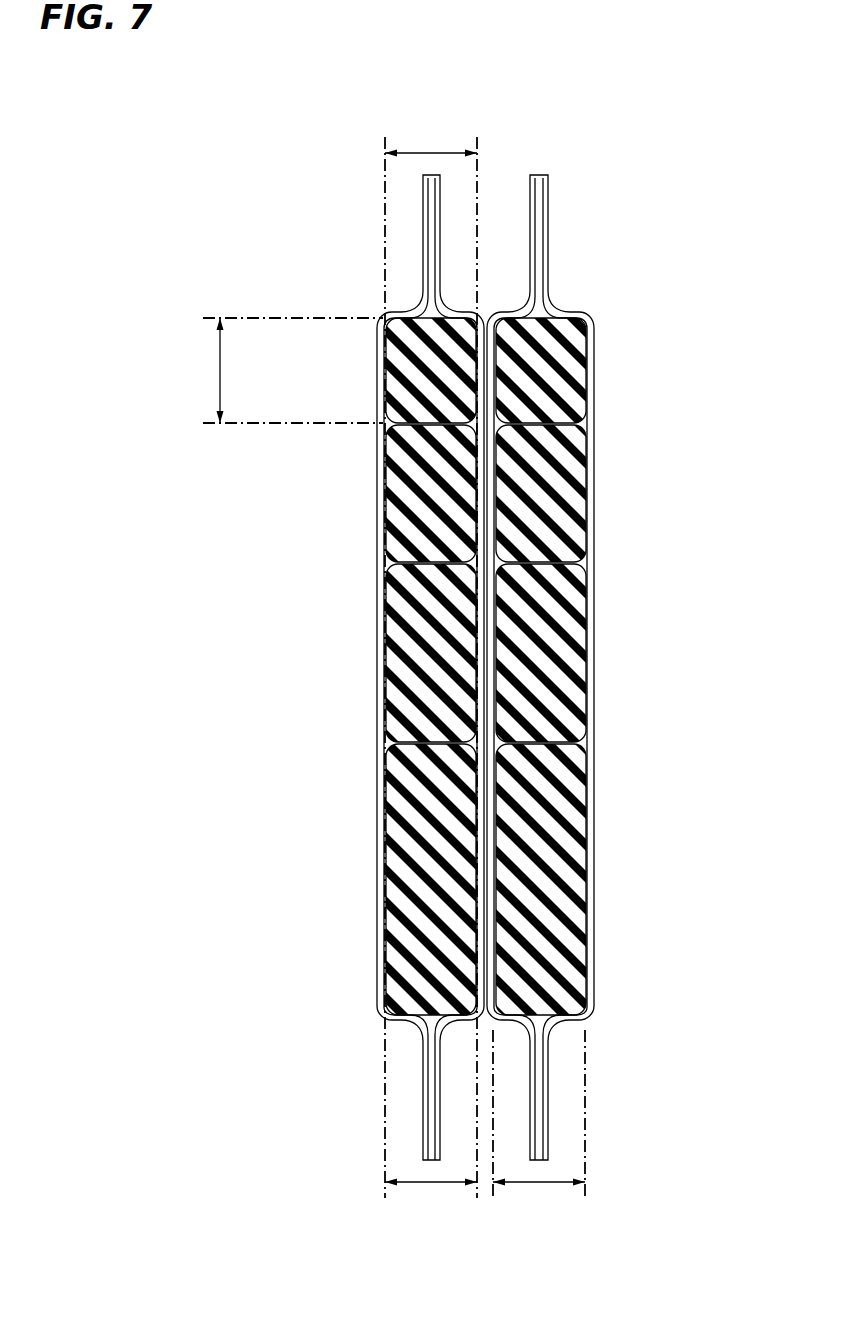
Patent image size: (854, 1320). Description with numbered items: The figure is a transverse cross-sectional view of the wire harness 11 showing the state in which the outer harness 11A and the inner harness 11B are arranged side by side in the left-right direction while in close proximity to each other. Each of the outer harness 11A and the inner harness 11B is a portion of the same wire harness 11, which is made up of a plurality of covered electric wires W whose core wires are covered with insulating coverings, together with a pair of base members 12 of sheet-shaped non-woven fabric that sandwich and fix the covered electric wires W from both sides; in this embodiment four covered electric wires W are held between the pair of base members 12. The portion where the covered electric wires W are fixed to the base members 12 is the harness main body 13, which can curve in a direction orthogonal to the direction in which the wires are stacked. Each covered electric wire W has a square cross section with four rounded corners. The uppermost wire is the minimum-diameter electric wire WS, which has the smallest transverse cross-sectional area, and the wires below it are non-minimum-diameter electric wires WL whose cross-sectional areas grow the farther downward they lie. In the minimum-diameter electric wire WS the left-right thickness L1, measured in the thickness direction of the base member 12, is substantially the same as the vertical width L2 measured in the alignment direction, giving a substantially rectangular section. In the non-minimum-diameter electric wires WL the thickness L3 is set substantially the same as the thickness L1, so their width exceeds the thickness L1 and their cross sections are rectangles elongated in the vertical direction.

The wire harness 11 is at (487, 667).
The outer harness 11A is at (590, 279).
The inner harness 11B is at (374, 289).
The base member 12 is at (480, 590).
The harness main body 13 is at (356, 768).
The covered electric wire W is at (530, 664).
The minimum-diameter electric wire WS is at (545, 403).
The non-minimum-diameter electric wire WL is at (553, 648).
The thickness L1 is at (432, 152).
The width L2 is at (220, 362).
The thickness L3 is at (433, 1182).